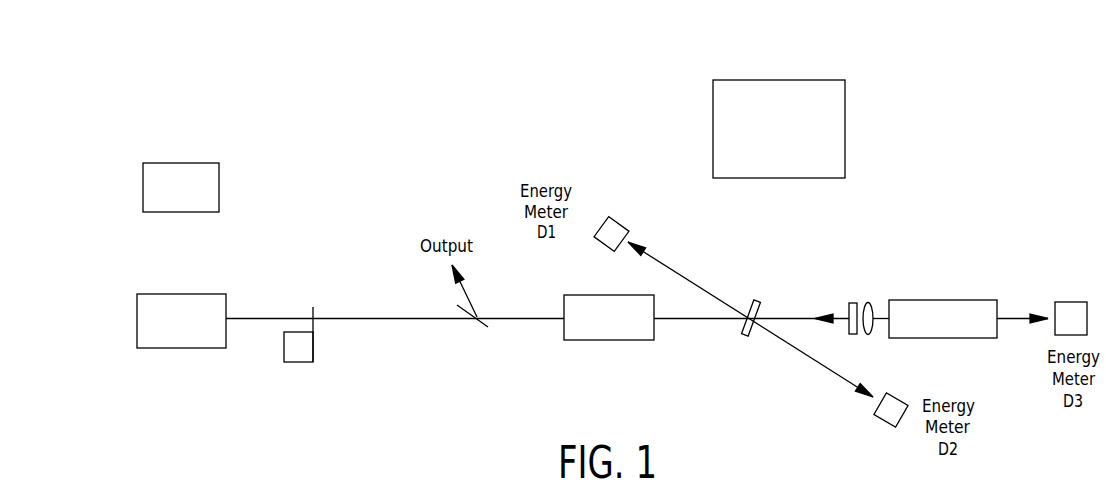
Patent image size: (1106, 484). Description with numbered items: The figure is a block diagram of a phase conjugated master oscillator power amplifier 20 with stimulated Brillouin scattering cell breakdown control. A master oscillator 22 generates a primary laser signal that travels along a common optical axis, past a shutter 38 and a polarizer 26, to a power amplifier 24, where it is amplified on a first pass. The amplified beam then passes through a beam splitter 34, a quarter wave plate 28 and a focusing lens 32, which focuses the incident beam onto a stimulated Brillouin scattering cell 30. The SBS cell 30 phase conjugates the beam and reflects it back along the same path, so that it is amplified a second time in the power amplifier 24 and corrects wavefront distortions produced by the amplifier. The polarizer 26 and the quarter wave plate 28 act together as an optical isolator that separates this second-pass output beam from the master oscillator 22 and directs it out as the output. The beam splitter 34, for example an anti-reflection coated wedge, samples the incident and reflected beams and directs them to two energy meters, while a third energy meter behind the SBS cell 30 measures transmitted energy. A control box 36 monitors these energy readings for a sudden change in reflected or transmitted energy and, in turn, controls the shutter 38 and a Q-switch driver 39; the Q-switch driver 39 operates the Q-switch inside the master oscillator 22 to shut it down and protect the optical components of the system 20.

The phase conjugated master oscillator power amplifier 20 is at (957, 215).
The master oscillator 22 is at (137, 348).
The power amplifier 24 is at (564, 340).
The polarizer 26 is at (475, 315).
The quarter wave plate 28 is at (856, 303).
The stimulated Brillouin scattering cell 30 is at (997, 300).
The focusing lens 32 is at (869, 302).
The beam splitter 34 is at (750, 302).
The control box 36 is at (845, 125).
The shutter 38 is at (284, 362).
The Q-switch driver 39 is at (219, 200).